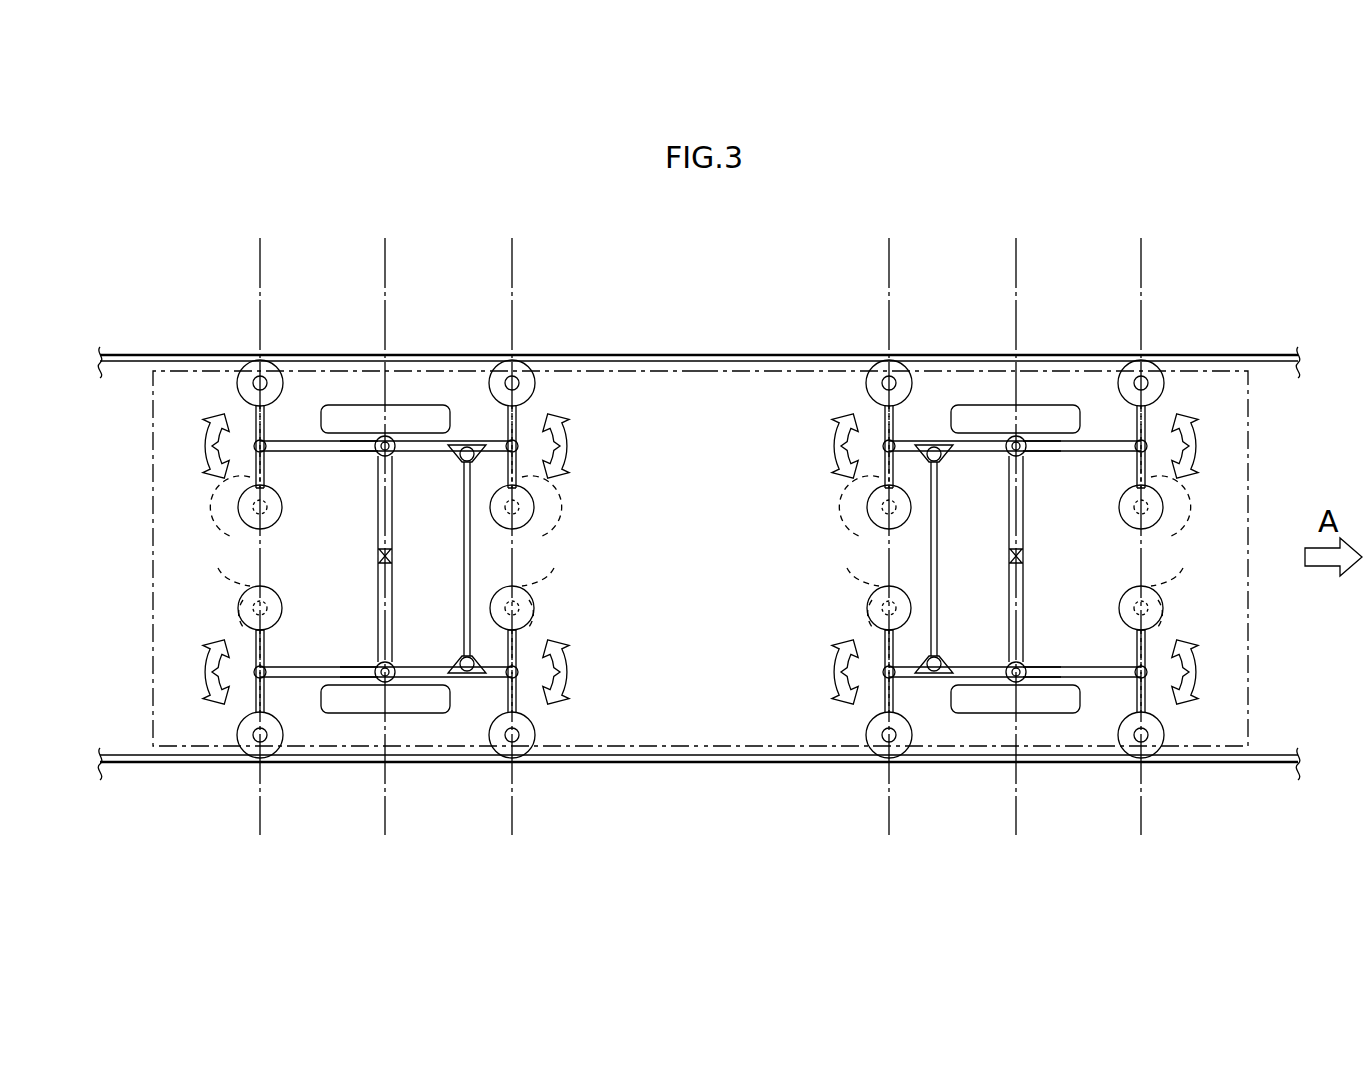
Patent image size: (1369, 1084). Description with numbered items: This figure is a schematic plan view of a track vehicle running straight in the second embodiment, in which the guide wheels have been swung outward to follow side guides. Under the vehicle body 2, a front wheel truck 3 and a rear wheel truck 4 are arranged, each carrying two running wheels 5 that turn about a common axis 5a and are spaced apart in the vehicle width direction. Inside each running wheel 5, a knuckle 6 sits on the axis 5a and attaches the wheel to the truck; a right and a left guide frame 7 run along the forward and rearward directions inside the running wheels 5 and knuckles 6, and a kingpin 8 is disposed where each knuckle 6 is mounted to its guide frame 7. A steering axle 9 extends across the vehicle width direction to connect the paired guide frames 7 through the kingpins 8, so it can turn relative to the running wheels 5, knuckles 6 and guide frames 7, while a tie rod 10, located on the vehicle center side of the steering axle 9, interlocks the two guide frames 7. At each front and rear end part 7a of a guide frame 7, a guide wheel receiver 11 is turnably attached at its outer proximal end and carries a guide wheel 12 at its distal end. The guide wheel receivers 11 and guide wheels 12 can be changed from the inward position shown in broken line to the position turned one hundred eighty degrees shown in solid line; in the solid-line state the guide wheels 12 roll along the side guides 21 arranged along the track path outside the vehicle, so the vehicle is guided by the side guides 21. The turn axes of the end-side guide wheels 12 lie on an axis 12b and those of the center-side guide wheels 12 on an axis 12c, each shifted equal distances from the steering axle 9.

The vehicle body 2 is at (692, 368).
The front wheel truck 3 is at (836, 381).
The rear wheel truck 4 is at (203, 384).
The running wheel 5 is at (416, 412).
The axis 5a is at (385, 825).
The knuckle 6 is at (378, 448).
The guide frame 7 is at (347, 446).
The end part 7a is at (265, 449).
The kingpin 8 is at (393, 452).
The steering axle 9 is at (378, 530).
The tie rod 10 is at (464, 553).
The guide wheel receiver 11 is at (265, 425).
The guide wheel 12 is at (255, 378).
The axis 12b is at (258, 830).
The axis 12c is at (514, 826).
The side guide 21 is at (104, 352).